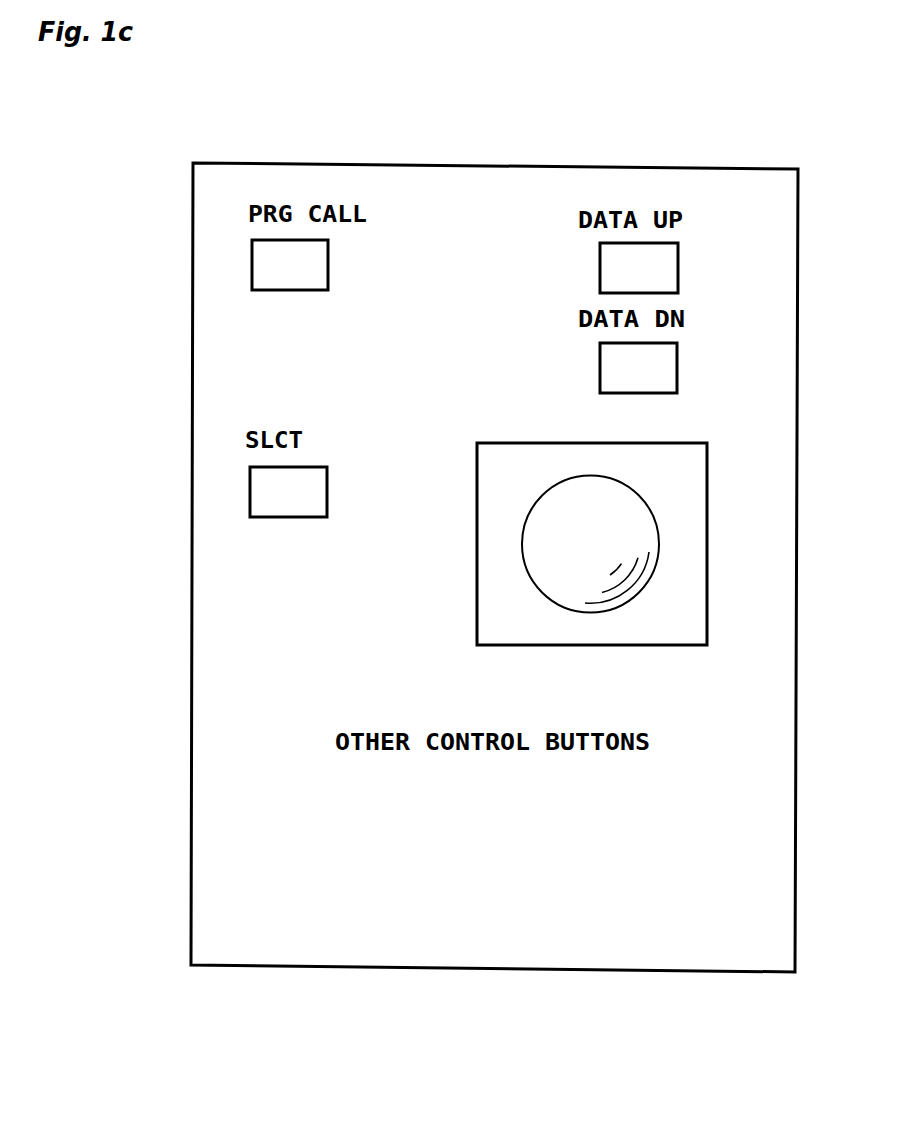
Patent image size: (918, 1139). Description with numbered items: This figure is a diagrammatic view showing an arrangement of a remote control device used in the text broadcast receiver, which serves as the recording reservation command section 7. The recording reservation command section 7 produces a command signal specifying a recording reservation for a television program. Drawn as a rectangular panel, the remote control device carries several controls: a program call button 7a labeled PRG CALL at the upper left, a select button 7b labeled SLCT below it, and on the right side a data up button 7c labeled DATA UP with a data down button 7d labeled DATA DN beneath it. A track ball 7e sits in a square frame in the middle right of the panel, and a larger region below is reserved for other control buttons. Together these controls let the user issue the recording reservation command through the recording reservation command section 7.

The recording reservation command section 7 is at (572, 160).
The program call button 7a is at (330, 265).
The select button 7b is at (329, 497).
The data up button 7c is at (680, 272).
The data down button 7d is at (679, 372).
The track ball 7e is at (652, 510).